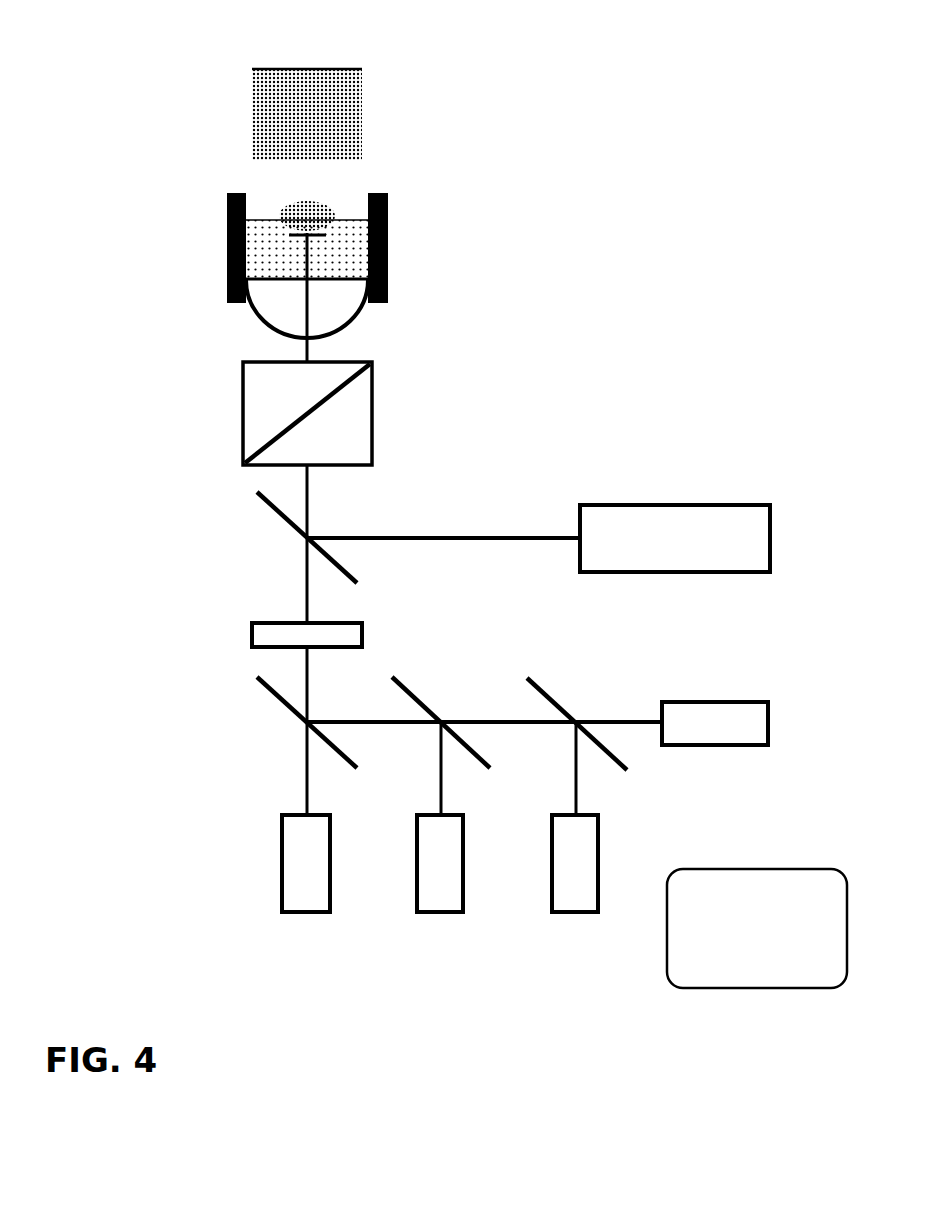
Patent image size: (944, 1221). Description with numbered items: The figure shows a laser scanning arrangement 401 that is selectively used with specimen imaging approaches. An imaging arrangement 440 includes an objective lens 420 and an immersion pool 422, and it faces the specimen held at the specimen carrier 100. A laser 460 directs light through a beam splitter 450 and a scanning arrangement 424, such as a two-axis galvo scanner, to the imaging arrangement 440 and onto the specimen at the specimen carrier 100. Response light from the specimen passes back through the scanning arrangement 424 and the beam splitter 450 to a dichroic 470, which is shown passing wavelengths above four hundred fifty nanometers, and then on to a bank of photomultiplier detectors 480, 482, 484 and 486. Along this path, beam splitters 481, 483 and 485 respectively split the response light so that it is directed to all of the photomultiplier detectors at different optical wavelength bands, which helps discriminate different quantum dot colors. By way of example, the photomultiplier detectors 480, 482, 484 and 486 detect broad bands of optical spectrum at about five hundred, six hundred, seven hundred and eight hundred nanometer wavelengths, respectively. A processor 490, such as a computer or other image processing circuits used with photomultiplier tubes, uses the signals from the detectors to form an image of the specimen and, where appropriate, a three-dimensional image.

The specimen carrier 100 is at (307, 58).
The laser scanning arrangement 401 is at (532, 57).
The immersion pool 422 is at (250, 258).
The imaging arrangement 440 is at (397, 268).
The objective lens 420 is at (330, 315).
The scanning arrangement 424 is at (243, 431).
The beam splitter 450 is at (302, 538).
The laser 460 is at (775, 537).
The dichroic 470 is at (366, 640).
The beam splitter 481 is at (295, 712).
The beam splitter 483 is at (430, 728).
The beam splitter 485 is at (566, 727).
The photomultiplier detector 486 is at (710, 697).
The photomultiplier detector 480 is at (295, 1012).
The photomultiplier detector 482 is at (433, 1012).
The photomultiplier detector 484 is at (568, 1012).
The processor 490 is at (803, 869).